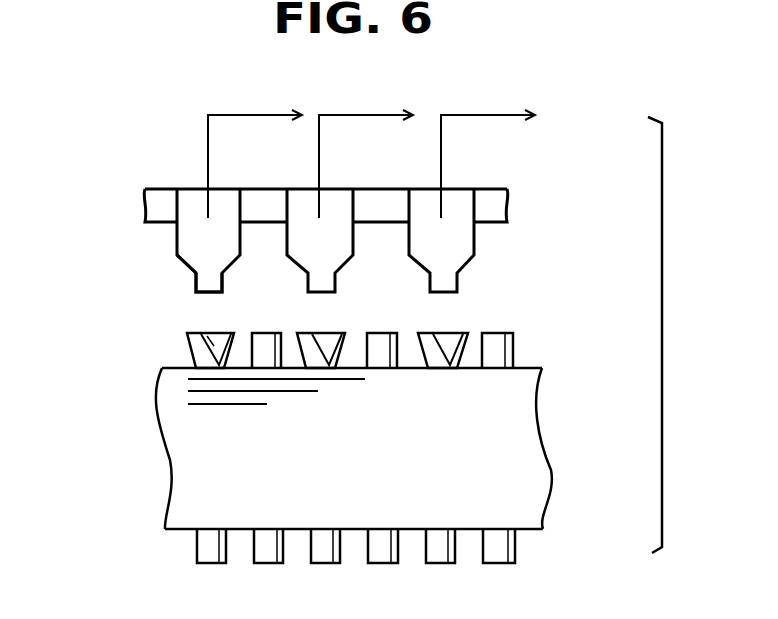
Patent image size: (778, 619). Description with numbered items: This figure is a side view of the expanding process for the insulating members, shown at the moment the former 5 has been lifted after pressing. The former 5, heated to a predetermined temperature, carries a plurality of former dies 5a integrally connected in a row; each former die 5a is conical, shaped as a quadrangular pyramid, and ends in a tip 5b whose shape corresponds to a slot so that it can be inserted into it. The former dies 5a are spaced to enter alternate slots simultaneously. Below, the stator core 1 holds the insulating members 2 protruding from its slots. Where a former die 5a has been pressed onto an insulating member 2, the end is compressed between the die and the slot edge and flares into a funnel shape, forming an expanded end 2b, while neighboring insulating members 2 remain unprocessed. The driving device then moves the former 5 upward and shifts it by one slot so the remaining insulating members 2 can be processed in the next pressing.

The stator core 1 is at (525, 498).
The insulating member 2 is at (493, 352).
The expanded end 2b is at (203, 351).
The former 5 is at (255, 200).
The former die 5a is at (200, 256).
The tip of the die 5b is at (200, 284).